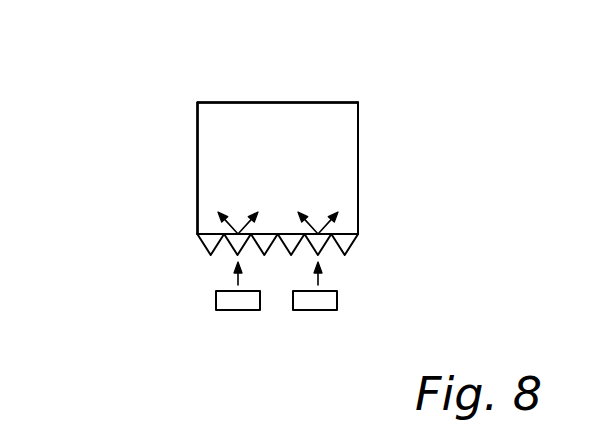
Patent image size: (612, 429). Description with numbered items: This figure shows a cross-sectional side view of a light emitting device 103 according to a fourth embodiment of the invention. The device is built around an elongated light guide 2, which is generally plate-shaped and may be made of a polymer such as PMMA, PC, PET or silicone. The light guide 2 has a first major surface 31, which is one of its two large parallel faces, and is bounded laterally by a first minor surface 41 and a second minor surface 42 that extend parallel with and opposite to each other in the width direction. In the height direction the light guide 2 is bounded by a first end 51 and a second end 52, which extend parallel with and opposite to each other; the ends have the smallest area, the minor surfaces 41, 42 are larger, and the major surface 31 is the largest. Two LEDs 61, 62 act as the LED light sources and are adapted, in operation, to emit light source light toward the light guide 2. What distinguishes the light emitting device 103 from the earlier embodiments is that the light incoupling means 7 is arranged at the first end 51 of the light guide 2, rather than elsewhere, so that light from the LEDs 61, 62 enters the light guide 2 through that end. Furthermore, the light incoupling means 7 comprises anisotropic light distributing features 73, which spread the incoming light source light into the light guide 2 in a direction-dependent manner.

The light emitting device 103 is at (152, 72).
The elongated light guide 2 is at (148, 213).
The light in-coupling element 7 is at (195, 270).
The first major surface 31 is at (250, 153).
The first minor surface 41 is at (358, 185).
The second minor surface 42 is at (198, 153).
The first end 51 is at (278, 234).
The second end 52 is at (293, 102).
The LED 61 is at (233, 310).
The LED 62 is at (320, 310).
The anisotropic light distributing features 73 is at (350, 250).